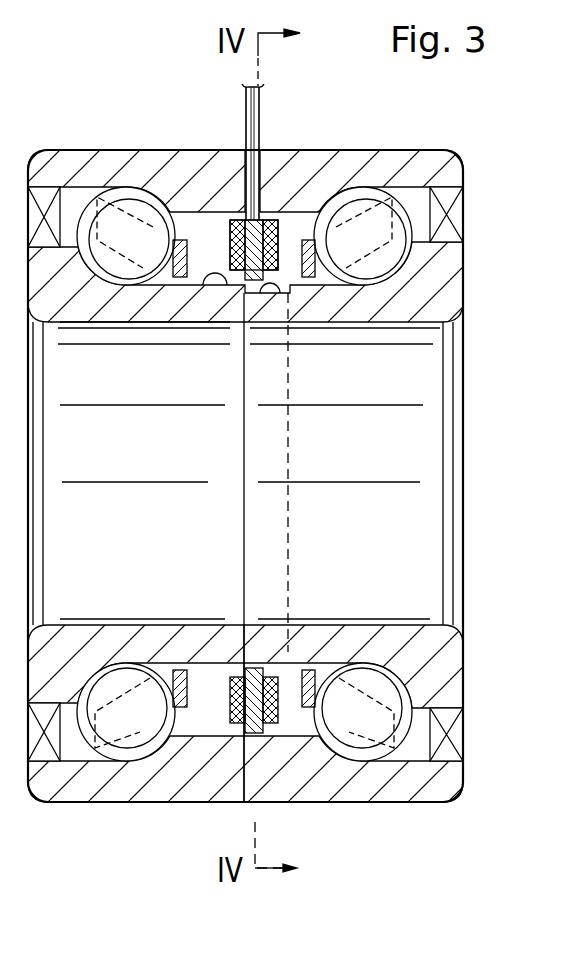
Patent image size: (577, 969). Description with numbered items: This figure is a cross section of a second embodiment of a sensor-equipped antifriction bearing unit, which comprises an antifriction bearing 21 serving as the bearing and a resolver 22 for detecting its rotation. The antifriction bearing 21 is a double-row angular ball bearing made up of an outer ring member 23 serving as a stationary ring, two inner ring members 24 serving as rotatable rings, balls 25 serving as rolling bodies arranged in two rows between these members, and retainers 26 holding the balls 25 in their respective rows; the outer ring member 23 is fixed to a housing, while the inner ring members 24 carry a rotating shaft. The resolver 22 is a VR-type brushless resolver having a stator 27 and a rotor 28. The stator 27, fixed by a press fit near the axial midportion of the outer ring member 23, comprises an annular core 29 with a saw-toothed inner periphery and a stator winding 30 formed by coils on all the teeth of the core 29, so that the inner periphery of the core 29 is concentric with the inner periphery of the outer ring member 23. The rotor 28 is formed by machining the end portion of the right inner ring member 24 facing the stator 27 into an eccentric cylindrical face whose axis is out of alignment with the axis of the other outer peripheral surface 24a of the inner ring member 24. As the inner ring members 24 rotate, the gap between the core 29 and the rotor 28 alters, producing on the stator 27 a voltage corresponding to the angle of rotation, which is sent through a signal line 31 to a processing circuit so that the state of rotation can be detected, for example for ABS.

The antifriction bearing 21 is at (476, 287).
The resolver 22 is at (288, 228).
The outer ring member 23 is at (412, 150).
The inner ring member 24 is at (413, 298).
The outer peripheral surface 24a is at (157, 323).
The ball 25 is at (407, 257).
The retainer 26 is at (307, 280).
The stator 27 is at (226, 182).
The rotor 28 is at (228, 327).
The core 29 is at (261, 220).
The stator winding 30 is at (228, 221).
The signal line 31 is at (259, 100).